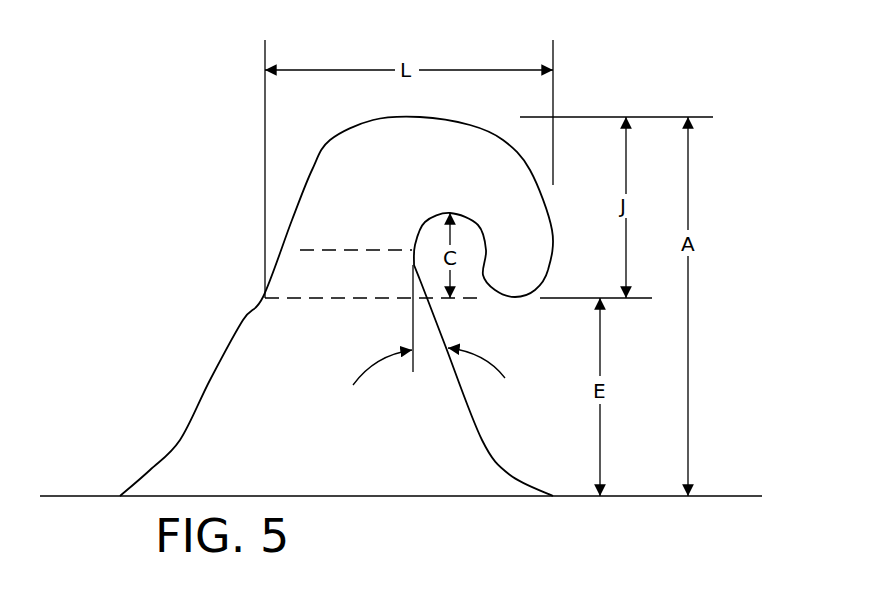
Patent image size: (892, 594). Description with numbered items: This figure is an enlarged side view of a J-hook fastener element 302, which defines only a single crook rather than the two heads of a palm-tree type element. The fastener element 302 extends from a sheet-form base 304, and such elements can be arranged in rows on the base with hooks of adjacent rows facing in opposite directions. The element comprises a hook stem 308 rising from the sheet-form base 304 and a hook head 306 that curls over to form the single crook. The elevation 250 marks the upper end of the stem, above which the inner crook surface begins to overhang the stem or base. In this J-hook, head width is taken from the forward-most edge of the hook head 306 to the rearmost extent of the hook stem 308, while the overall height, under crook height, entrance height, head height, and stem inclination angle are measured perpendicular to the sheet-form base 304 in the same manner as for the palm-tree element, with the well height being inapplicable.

The elevation 250 is at (300, 250).
The fastener element 302 is at (397, 260).
The sheet-form base 304 is at (720, 496).
The hook head 306 is at (535, 234).
The hook stem 308 is at (385, 433).